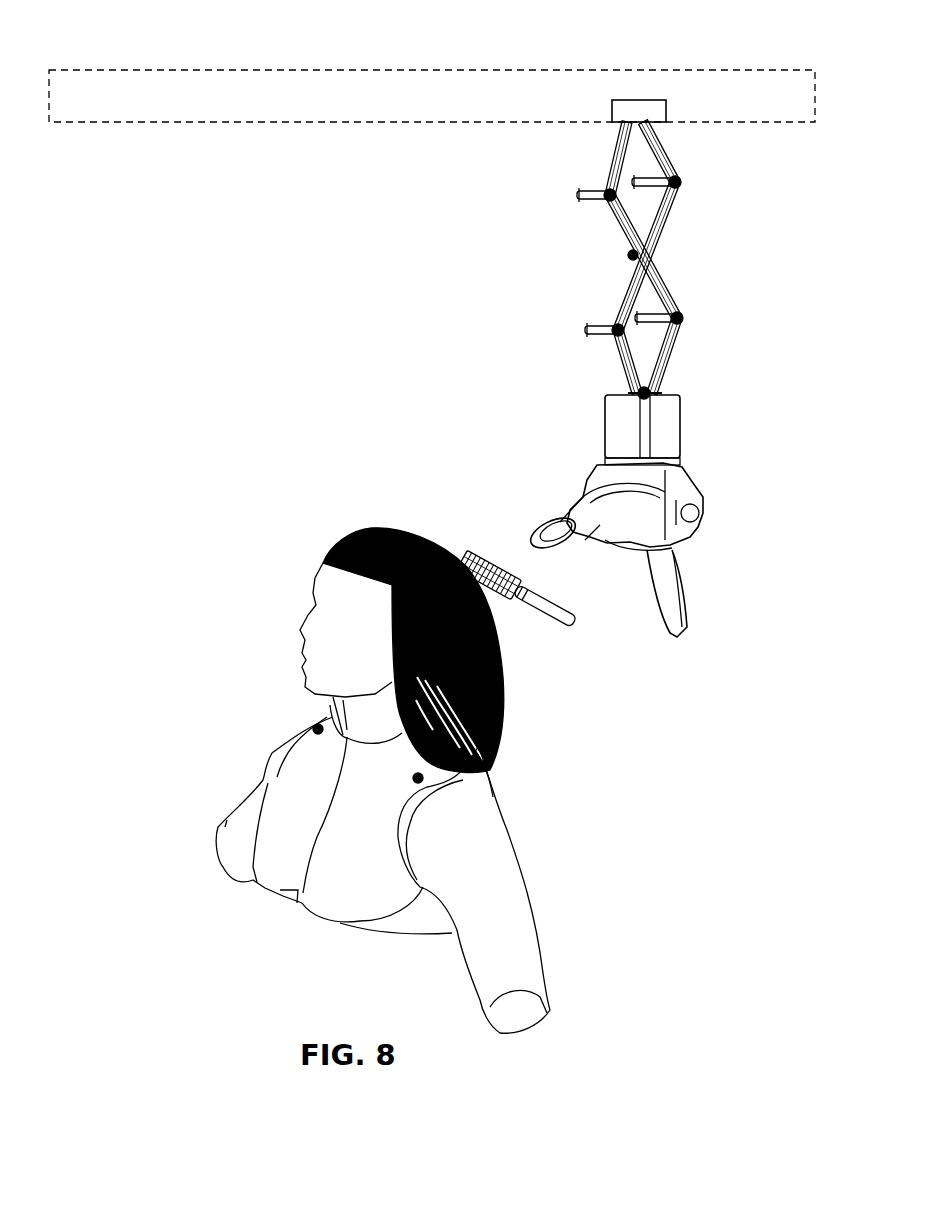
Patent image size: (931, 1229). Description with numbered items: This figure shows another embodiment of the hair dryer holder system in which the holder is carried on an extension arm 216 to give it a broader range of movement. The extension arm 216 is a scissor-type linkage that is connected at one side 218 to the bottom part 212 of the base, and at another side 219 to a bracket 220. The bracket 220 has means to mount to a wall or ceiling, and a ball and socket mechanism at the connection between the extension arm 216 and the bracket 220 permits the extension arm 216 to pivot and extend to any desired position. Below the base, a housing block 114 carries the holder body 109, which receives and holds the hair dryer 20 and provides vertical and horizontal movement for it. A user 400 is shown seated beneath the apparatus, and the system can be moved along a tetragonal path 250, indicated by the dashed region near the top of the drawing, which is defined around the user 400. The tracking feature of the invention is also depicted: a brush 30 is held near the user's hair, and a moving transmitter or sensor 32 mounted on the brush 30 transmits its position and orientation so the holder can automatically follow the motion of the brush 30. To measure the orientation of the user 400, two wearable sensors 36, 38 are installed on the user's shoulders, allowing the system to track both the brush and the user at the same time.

The tetragonal path 250 is at (768, 110).
The bracket 220 is at (643, 108).
The another side of the extension arm 219 is at (627, 127).
The extension arm 216 is at (650, 290).
The one side of the extension arm 218 is at (620, 367).
The bottom part of the base 212 is at (660, 388).
The housing block 114 is at (668, 430).
The clamp body 109 is at (592, 470).
The hair dryer 20 is at (677, 588).
The user 400 is at (280, 867).
The wearable sensor 36 is at (318, 728).
The wearable sensor 38 is at (423, 783).
The brush 30 is at (553, 607).
The moving transmitter (sensor) 32 is at (490, 517).